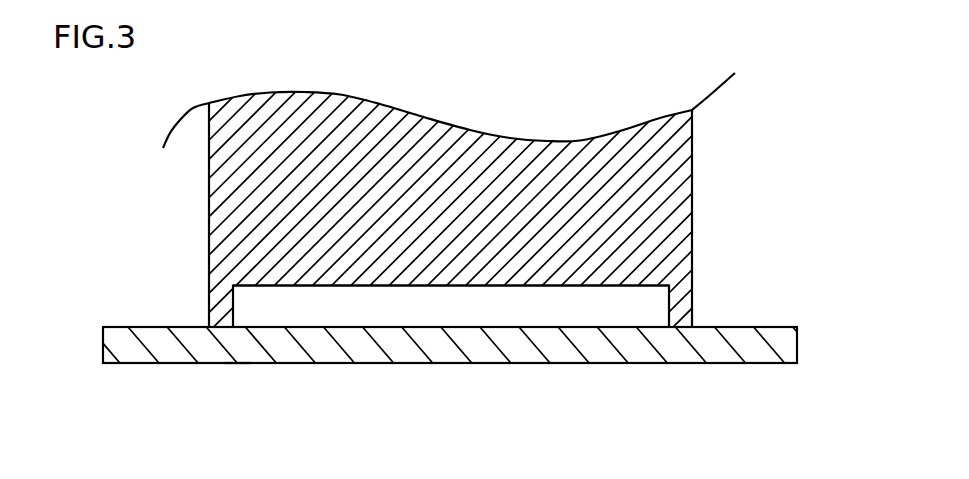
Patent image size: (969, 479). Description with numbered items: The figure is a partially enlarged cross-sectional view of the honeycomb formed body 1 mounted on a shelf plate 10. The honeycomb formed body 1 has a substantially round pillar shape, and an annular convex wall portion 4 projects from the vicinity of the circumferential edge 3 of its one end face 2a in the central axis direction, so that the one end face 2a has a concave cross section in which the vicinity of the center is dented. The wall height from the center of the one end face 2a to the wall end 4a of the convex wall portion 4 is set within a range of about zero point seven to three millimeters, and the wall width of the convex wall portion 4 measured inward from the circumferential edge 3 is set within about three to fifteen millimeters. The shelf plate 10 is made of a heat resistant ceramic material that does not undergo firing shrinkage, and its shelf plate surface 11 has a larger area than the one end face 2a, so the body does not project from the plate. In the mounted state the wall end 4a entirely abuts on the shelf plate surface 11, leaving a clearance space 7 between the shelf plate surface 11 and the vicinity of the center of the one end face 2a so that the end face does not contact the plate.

The honeycomb formed body 1 is at (136, 199).
The one end face 2a is at (537, 286).
The circumferential edge 3 is at (461, 327).
The convex wall portion 4 is at (217, 310).
The wall end 4a is at (237, 366).
The clearance space 7 is at (381, 311).
The shelf plate 10 is at (778, 342).
The shelf plate surface 11 is at (757, 326).